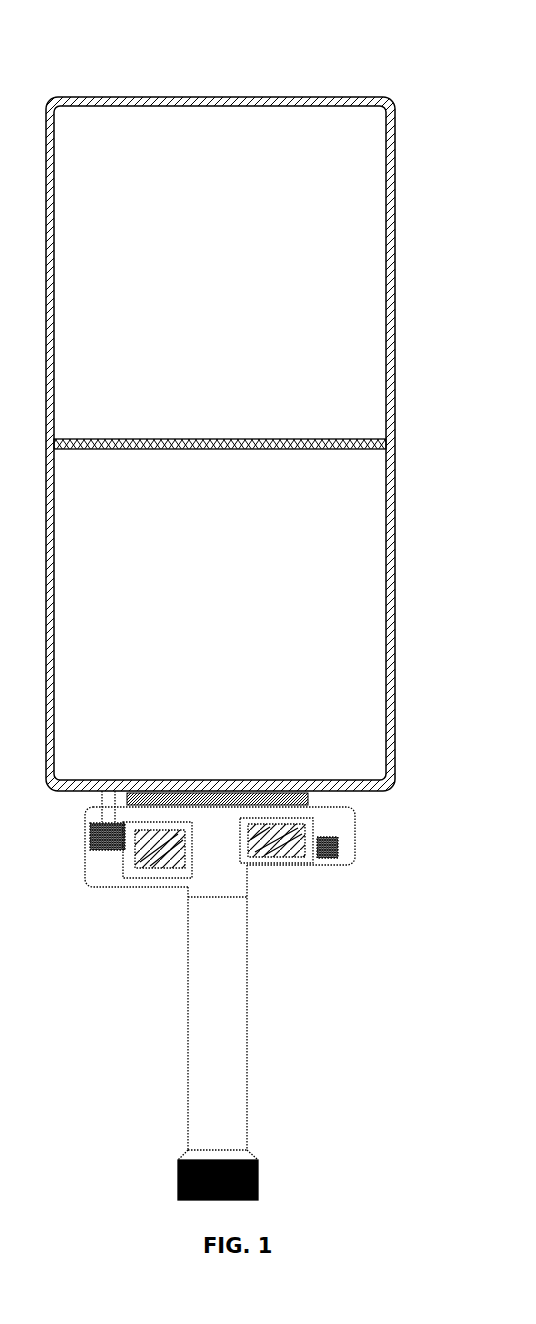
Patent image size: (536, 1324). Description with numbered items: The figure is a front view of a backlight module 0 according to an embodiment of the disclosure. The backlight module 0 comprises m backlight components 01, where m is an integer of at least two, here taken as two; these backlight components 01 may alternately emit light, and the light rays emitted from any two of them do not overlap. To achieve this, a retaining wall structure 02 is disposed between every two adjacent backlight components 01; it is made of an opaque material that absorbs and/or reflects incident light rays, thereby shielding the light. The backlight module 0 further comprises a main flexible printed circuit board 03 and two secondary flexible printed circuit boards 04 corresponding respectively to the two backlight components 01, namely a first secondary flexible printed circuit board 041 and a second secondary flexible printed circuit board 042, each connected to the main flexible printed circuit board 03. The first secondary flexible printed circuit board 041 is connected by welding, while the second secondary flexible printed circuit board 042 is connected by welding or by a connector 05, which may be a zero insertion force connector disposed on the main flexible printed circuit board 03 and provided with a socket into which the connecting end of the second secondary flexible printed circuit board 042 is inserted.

The backlight module 0 is at (230, 29).
The backlight component 01 is at (368, 303).
The retaining wall structure 02 is at (394, 444).
The main flexible printed circuit board 03 is at (226, 1088).
The secondary flexible printed circuit board 04 is at (220, 911).
The first secondary flexible printed circuit board 041 is at (106, 878).
The second secondary flexible printed circuit board 042 is at (244, 878).
The connector 05 is at (347, 850).